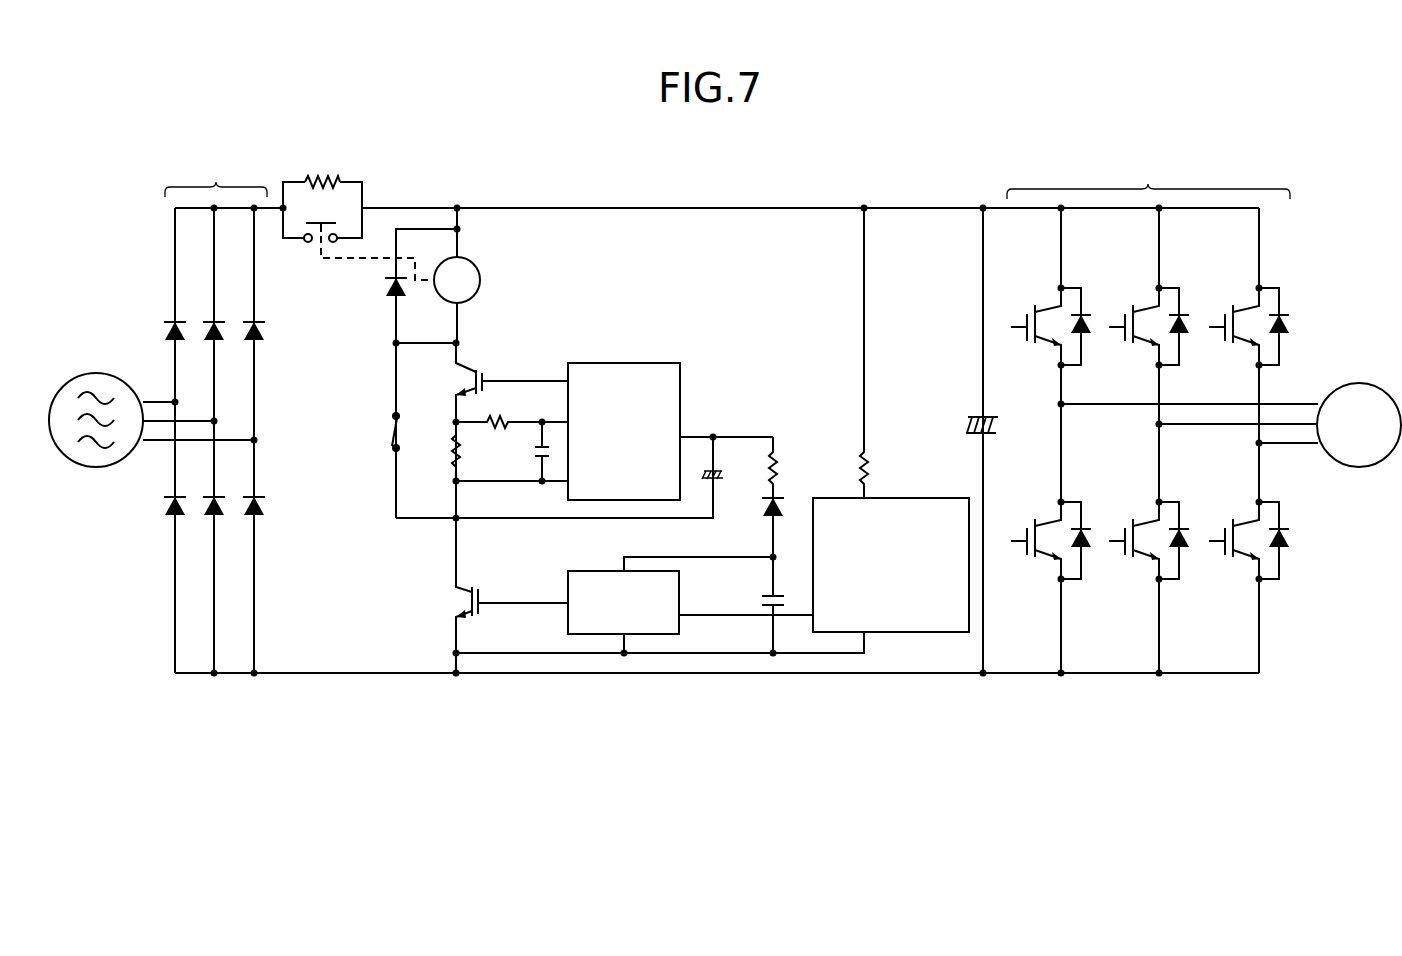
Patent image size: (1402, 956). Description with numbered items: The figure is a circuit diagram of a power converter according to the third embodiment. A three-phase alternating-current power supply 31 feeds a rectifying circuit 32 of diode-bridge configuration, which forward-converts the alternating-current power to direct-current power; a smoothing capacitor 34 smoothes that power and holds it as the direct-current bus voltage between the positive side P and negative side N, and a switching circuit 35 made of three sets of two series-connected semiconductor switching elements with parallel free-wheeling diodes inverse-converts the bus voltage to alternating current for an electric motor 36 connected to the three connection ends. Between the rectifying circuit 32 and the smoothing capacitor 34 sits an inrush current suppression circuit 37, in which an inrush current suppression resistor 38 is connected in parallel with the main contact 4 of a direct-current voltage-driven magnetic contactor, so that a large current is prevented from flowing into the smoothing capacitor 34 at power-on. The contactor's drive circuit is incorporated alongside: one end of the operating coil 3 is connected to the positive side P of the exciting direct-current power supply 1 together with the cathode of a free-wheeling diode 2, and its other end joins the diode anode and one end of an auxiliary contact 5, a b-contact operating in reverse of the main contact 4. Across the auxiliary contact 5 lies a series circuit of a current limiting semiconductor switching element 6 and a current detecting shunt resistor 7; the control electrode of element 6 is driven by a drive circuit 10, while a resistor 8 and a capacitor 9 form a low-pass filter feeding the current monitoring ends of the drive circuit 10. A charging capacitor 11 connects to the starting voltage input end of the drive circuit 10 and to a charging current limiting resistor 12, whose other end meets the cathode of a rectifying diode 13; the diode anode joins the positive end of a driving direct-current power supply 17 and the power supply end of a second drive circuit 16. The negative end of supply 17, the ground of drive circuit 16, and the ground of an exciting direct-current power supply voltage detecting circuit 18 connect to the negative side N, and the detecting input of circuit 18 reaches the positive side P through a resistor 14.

The exciting direct-current power supply 1 is at (480, 207).
The free-wheeling diode 2 is at (389, 292).
The operating coil 3 is at (480, 264).
The main contact 4 is at (306, 250).
The auxiliary contact 5 is at (386, 432).
The current limiting semiconductor switching element 6 is at (472, 362).
The current detecting shunt resistor 7 is at (448, 460).
The resistor 8 is at (500, 420).
The capacitor 9 is at (530, 452).
The drive circuit 10 is at (680, 363).
The charging capacitor 11 is at (720, 472).
The charging current limiting resistor 12 is at (778, 462).
The rectifying diode 13 is at (783, 507).
The resistor 14 is at (870, 460).
The drive circuit 16 is at (655, 635).
The driving direct-current power supply 17 is at (785, 596).
The exciting direct-current power supply voltage detecting circuit 18 is at (931, 498).
The three-phase alternating-current power supply 31 is at (96, 373).
The rectifying circuit 32 is at (225, 419).
The smoothing capacitor 34 is at (972, 408).
The switching circuit 35 is at (1162, 419).
The electric motor 36 is at (1362, 383).
The inrush current suppression circuit 37 is at (291, 166).
The inrush current suppression resistor 38 is at (340, 180).